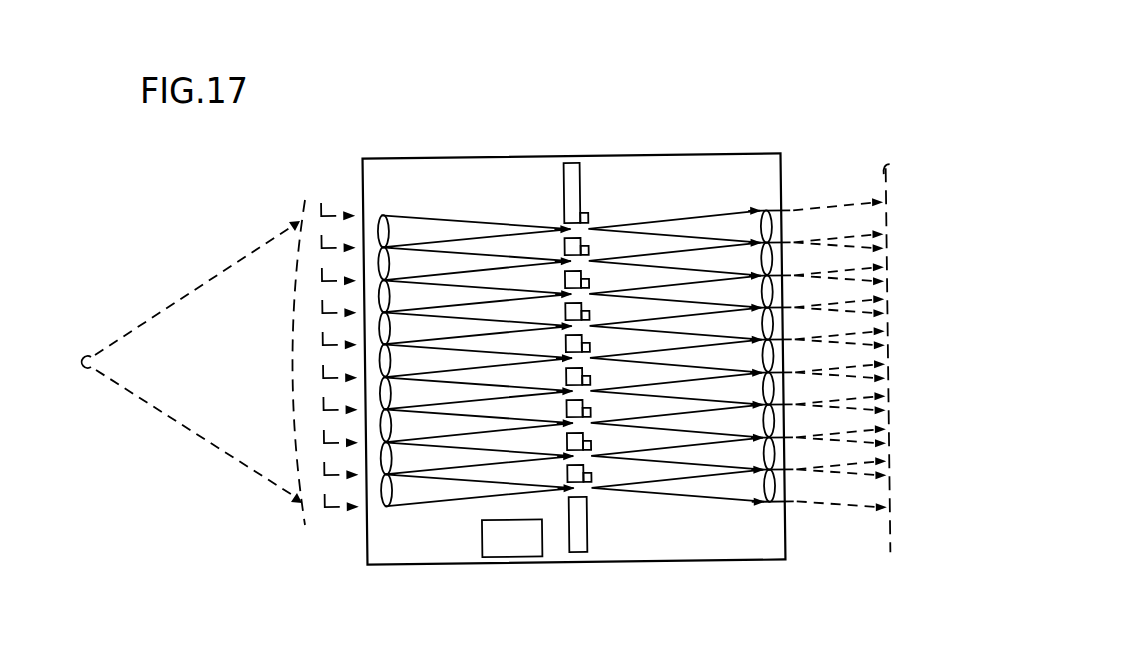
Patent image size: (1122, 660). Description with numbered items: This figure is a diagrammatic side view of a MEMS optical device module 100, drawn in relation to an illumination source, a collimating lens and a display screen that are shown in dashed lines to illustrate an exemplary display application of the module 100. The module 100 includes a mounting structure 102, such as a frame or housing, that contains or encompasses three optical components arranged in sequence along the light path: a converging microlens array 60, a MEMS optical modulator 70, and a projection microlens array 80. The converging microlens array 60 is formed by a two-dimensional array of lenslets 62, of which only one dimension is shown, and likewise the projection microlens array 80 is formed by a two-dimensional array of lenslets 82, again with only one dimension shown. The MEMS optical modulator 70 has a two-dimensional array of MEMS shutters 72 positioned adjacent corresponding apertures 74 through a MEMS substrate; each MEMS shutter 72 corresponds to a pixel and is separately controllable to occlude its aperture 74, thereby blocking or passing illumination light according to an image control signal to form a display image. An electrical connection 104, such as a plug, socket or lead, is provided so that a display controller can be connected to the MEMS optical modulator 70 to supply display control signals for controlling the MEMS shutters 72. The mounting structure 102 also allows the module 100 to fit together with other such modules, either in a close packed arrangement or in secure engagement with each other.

The MEMS optical device module 100 is at (749, 121).
The mounting structure 102 is at (427, 157).
The converging microlens array 60 is at (408, 376).
The lenslet 62 is at (392, 233).
The MEMS optical modulator 70 is at (574, 203).
The MEMS shutter 72 is at (592, 216).
The aperture 74 is at (578, 489).
The projection microlens array 80 is at (714, 361).
The lenslet 82 is at (764, 501).
The electrical connection 104 is at (512, 548).